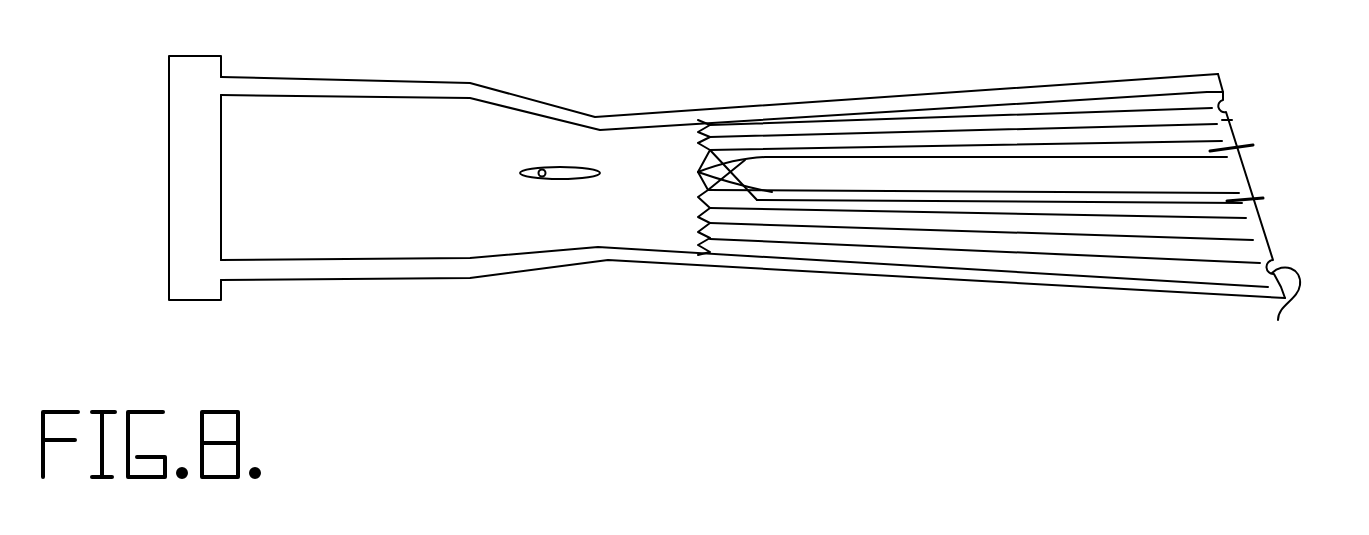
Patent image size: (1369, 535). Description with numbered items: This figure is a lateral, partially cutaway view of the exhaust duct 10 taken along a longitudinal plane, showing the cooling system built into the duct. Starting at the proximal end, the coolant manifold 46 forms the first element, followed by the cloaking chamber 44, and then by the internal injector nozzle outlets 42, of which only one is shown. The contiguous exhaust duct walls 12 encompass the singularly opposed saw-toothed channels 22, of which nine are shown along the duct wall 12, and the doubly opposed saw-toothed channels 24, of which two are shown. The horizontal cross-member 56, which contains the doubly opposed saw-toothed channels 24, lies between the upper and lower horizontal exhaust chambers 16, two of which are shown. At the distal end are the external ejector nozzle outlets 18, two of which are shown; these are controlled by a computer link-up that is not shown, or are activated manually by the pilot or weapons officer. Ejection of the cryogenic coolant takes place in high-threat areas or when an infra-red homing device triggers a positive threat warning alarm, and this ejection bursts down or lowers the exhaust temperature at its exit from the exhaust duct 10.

The exhaust duct 10 is at (891, 285).
The exhaust duct walls 12 is at (822, 107).
The horizontal exhaust chambers 16 is at (1232, 120).
The external ejector nozzle outlets 18 is at (1278, 320).
The singularly opposed saw-toothed channels 22 is at (945, 113).
The doubly opposed saw-toothed channels 24 is at (1253, 145).
The internal injector nozzle outlets 42 is at (543, 168).
The cloaking chamber 44 is at (360, 170).
The coolant manifold 46 is at (195, 172).
The horizontal cross-member 56 is at (1037, 177).